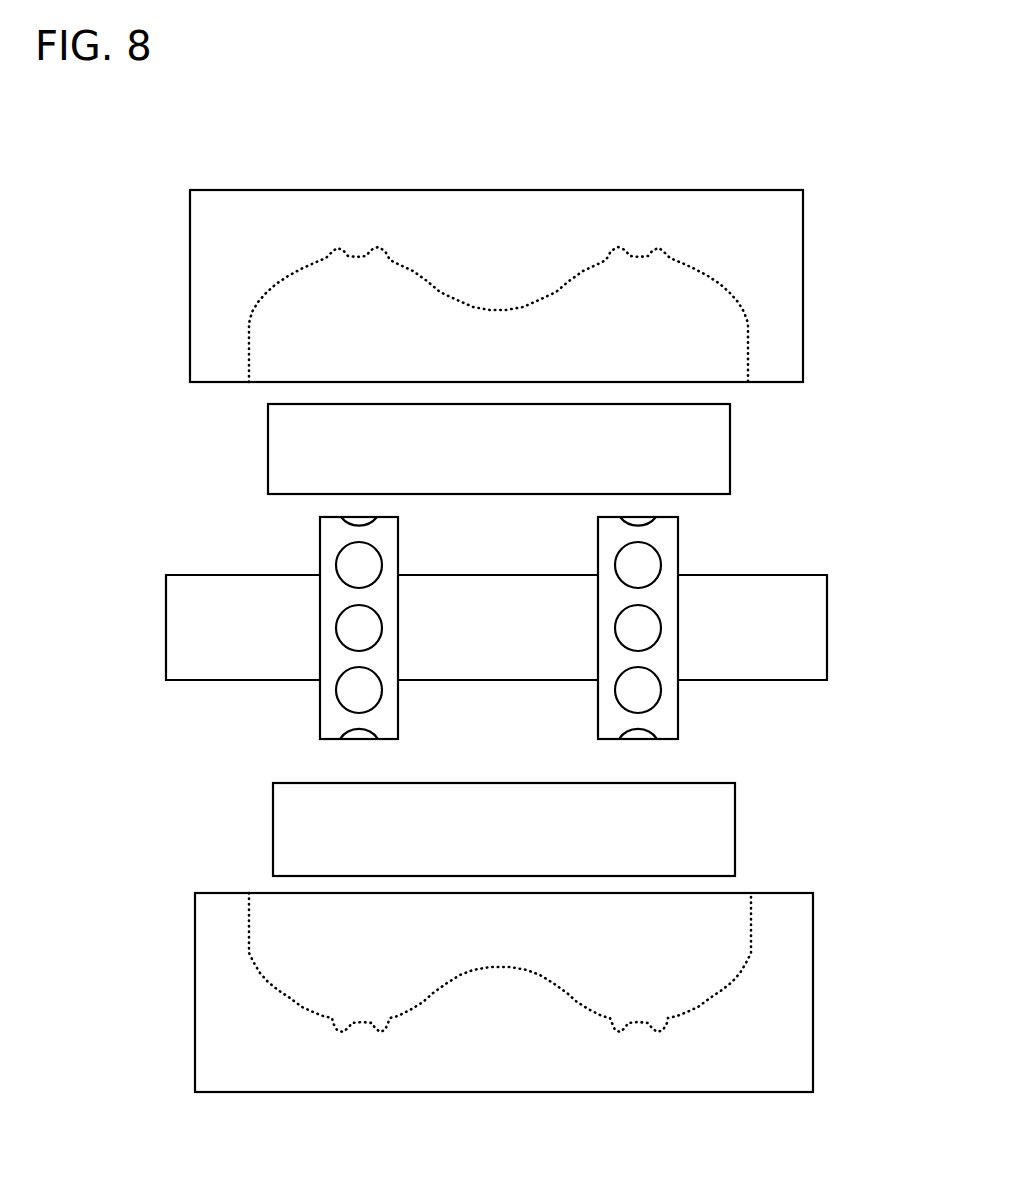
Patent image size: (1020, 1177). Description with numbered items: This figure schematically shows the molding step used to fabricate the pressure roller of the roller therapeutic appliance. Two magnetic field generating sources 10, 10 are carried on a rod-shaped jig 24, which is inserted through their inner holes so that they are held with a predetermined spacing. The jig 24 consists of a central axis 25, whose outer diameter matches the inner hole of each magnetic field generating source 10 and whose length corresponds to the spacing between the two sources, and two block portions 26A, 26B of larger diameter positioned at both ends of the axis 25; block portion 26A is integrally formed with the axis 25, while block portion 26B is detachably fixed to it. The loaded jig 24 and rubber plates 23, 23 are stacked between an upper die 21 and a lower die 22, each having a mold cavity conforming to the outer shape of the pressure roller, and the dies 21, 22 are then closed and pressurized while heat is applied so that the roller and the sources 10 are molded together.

The magnetic field generating source 10 is at (328, 535).
The upper die 21 is at (792, 250).
The lower die 22 is at (797, 930).
The rubber plate 23 is at (715, 456).
The rod-shaped jig 24 is at (535, 640).
The axis 25 is at (490, 670).
The block portion 26A is at (233, 670).
The block portion 26B is at (748, 670).